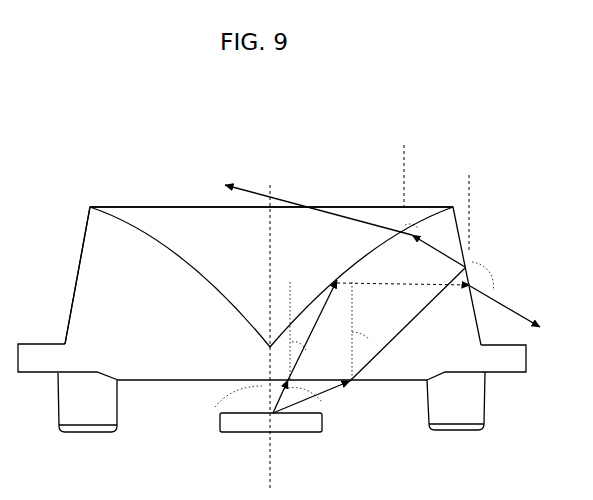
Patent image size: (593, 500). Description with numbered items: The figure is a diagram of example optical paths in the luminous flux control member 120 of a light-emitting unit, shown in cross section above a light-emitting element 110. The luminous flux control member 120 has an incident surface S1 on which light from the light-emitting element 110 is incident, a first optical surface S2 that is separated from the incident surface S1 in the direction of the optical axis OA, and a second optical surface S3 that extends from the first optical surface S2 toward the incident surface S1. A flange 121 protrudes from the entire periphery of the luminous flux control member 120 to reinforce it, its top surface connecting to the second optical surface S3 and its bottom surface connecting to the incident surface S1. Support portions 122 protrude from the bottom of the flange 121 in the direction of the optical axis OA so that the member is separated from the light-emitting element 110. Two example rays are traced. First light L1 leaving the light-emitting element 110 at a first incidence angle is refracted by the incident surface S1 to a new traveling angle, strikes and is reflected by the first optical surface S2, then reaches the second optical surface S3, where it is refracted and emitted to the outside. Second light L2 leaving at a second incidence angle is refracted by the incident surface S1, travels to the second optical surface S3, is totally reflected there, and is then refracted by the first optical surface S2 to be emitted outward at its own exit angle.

The light-emitting element 110 is at (293, 434).
The luminous flux control member 120 is at (445, 146).
The flange 121 is at (528, 355).
The support portions 122 is at (473, 400).
The incident surface S1 is at (398, 383).
The first optical surface S2 is at (133, 206).
The second optical surface S3 is at (76, 271).
The optical axis OA is at (270, 326).
The first light L1 is at (516, 311).
The second light L2 is at (334, 221).